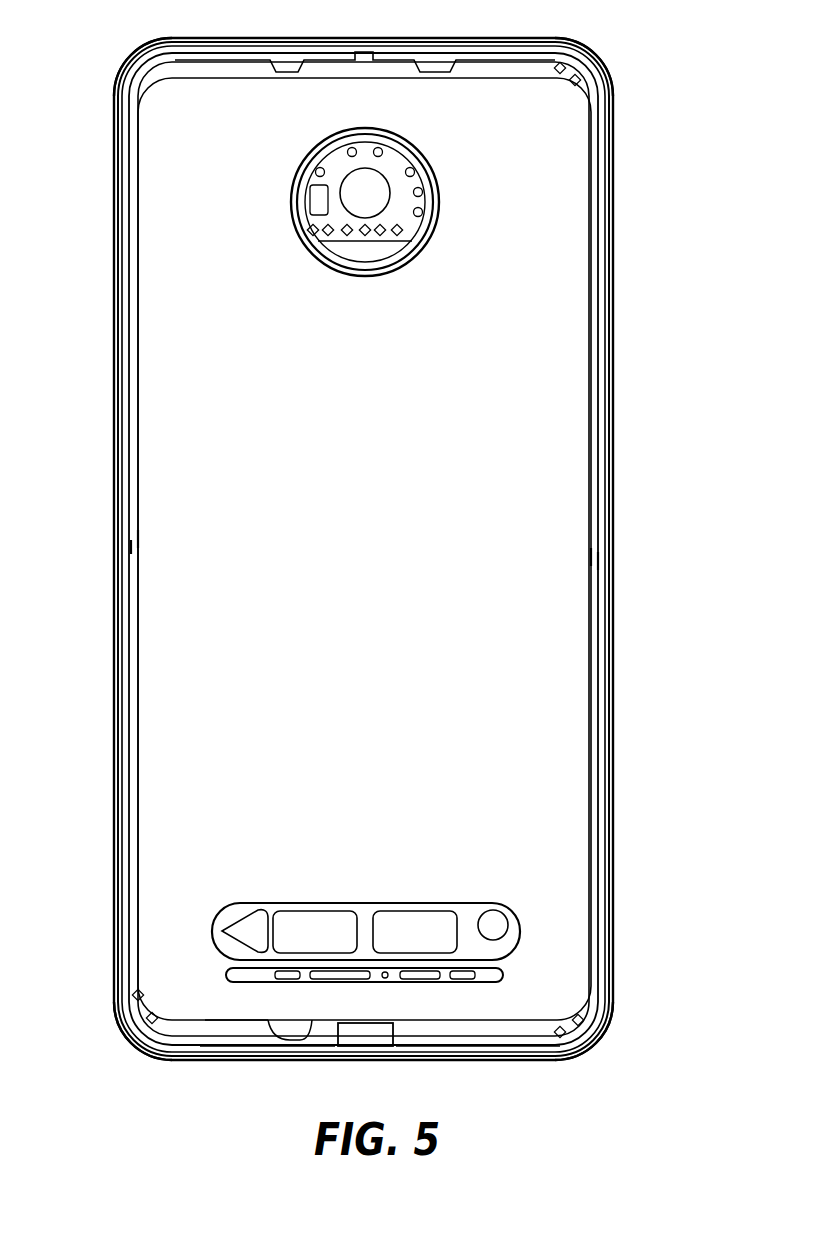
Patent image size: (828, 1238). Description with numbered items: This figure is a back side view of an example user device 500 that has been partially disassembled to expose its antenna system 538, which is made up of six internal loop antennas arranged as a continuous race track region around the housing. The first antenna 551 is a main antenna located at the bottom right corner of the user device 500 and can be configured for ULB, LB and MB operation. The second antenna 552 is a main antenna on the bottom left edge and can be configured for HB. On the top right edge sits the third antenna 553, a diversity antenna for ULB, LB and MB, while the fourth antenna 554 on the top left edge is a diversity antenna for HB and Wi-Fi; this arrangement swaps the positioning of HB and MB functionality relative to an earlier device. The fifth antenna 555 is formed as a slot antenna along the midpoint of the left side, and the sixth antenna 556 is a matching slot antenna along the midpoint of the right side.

The user device 500 is at (105, 96).
The antenna system 538 is at (215, 1035).
The first antenna 551 is at (606, 998).
The second antenna 552 is at (190, 1028).
The third antenna 553 is at (603, 110).
The fourth antenna 554 is at (240, 60).
The fifth antenna 555 is at (132, 556).
The sixth antenna 556 is at (598, 576).